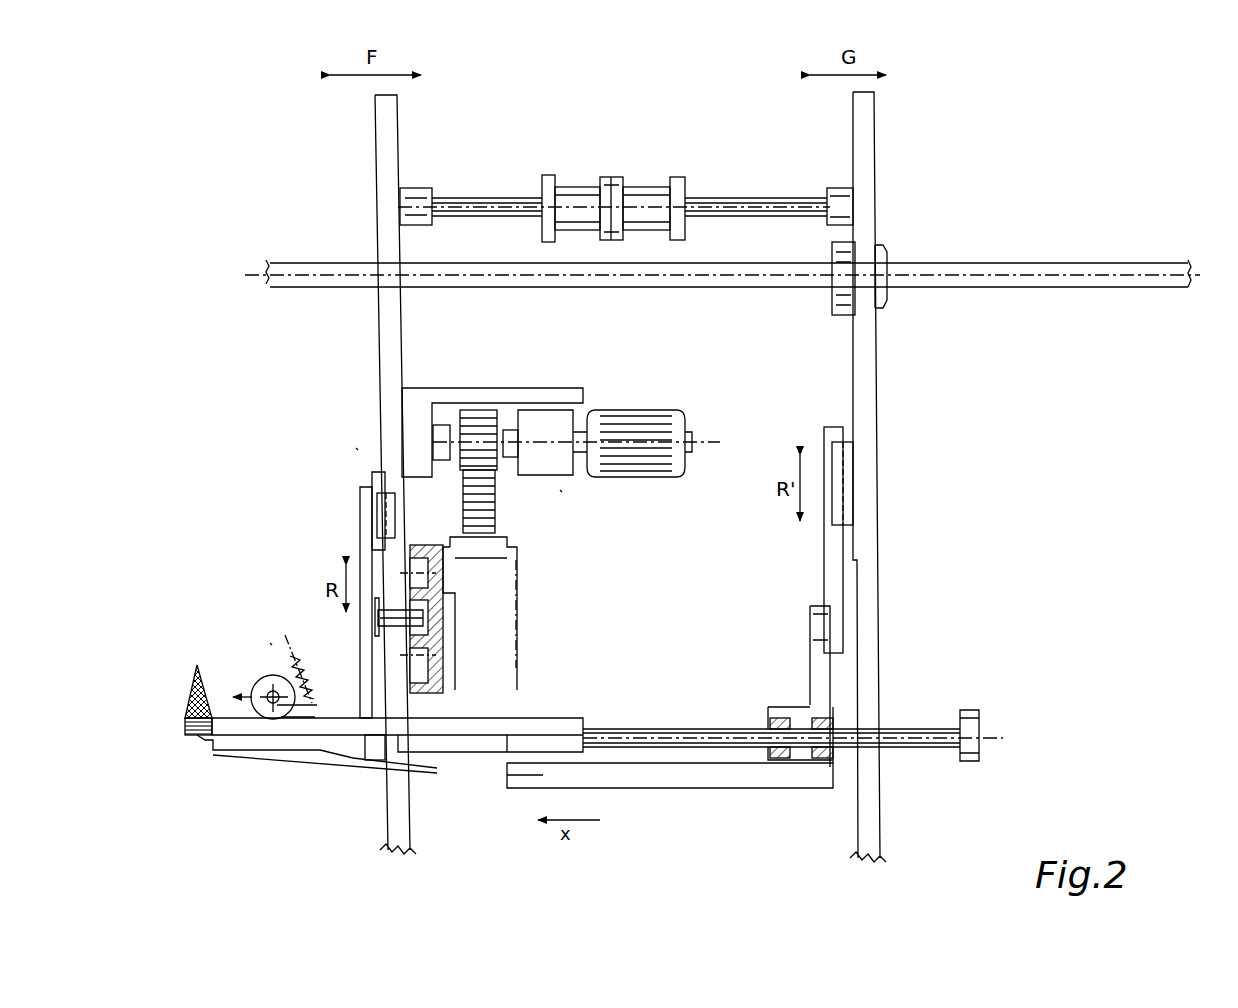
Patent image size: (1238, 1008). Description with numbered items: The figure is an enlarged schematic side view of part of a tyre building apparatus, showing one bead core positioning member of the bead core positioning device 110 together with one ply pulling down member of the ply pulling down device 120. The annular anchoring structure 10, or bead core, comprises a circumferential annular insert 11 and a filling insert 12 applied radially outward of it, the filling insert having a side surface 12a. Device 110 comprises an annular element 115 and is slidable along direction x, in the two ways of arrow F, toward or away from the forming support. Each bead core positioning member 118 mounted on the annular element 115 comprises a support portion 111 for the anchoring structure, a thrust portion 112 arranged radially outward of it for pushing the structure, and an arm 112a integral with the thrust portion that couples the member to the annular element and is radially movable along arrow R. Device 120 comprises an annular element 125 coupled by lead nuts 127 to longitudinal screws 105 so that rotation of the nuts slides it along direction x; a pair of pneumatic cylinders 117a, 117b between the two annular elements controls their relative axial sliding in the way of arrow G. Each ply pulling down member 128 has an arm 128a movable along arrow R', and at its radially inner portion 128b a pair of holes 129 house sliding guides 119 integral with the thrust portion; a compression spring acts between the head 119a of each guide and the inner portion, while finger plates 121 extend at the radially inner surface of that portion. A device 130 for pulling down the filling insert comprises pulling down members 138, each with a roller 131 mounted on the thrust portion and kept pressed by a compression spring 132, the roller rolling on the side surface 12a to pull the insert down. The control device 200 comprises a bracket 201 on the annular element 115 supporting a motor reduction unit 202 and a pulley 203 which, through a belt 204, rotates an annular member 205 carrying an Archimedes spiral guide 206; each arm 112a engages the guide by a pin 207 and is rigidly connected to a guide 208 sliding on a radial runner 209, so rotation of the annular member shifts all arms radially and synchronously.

The annular anchoring structure 10 is at (152, 708).
The annular insert 11 is at (186, 730).
The filling insert 12 is at (196, 673).
The side surface 12a is at (205, 668).
The longitudinal screw 105 is at (484, 278).
The bead core positioning device 110 is at (408, 121).
The support portion 111 is at (270, 757).
The thrust portion 112 is at (232, 740).
The arm 112a is at (362, 503).
The annular element 115 is at (377, 133).
The pneumatic cylinder 117a is at (578, 195).
The pneumatic cylinder 117b is at (652, 195).
The bead core positioning member 118 is at (358, 450).
The sliding guide 119 is at (640, 740).
The head 119a is at (968, 714).
The ply pulling down device 120 is at (829, 183).
The finger plate 121 is at (370, 760).
The annular element 125 is at (867, 142).
The lead nut 127 is at (832, 293).
The ply pulling down member 128 is at (830, 425).
The arm 128a is at (812, 607).
The radially inner portion 128b is at (780, 710).
The hole 129 is at (768, 752).
The filling insert pulling down device 130 is at (300, 620).
The roller 131 is at (268, 690).
The compression spring 132 is at (308, 688).
The filling insert pulling down member 138 is at (272, 645).
The control device 200 is at (560, 490).
The bracket 201 is at (530, 390).
The motor reduction unit 202 is at (638, 430).
The pulley 203 is at (497, 468).
The belt 204 is at (497, 505).
The annular member 205 is at (453, 636).
The spiral guide 206 is at (445, 680).
The pin 207 is at (388, 612).
The guide 208 is at (372, 480).
The runner 209 is at (395, 520).